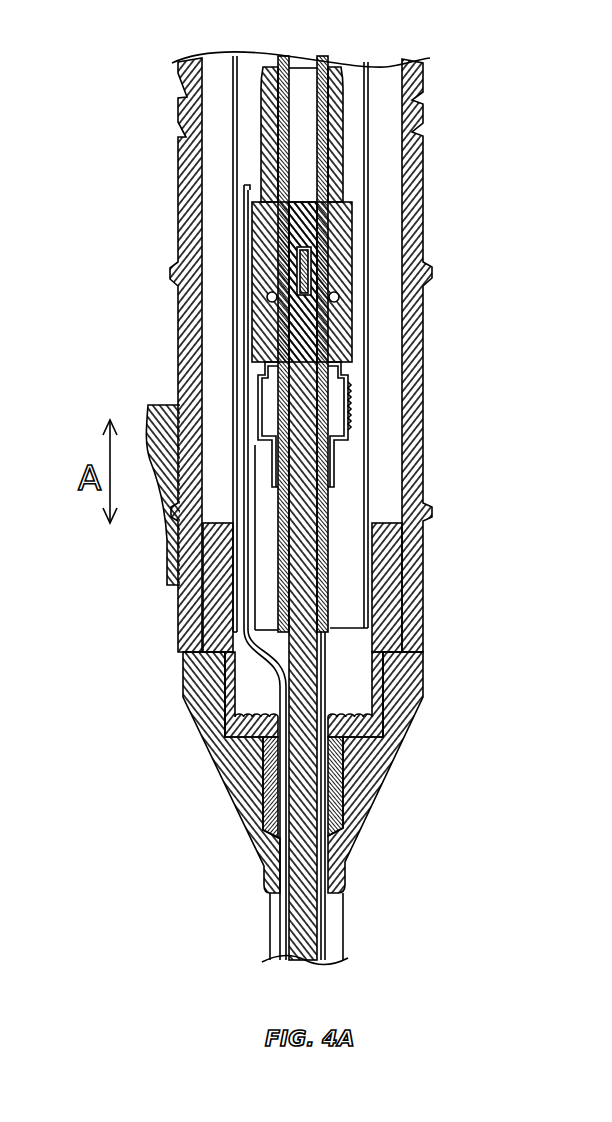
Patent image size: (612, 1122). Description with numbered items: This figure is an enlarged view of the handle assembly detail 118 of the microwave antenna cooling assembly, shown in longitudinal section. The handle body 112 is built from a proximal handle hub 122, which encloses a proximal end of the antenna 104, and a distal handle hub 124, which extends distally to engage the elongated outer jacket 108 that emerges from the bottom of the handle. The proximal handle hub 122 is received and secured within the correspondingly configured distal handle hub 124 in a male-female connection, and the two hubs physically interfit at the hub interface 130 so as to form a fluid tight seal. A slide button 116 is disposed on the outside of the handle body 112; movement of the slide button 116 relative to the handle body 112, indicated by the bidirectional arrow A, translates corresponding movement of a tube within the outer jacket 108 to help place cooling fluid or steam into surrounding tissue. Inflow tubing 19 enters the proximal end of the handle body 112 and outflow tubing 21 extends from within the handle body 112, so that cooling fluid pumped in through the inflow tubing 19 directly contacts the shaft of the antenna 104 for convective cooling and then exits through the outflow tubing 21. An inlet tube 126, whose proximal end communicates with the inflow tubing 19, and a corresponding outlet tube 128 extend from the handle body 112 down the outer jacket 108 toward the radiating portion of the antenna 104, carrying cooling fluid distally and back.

The handle assembly detail 118 is at (488, 40).
The handle body 112 is at (424, 210).
The proximal handle hub 122 is at (178, 372).
The inlet tube 126 is at (248, 242).
The inflow tubing 19 is at (268, 597).
The outflow tubing 21 is at (347, 527).
The slide button 116 is at (148, 408).
The distal handle hub 124 is at (200, 678).
The hub interface 130 is at (223, 712).
The antenna 104 is at (377, 690).
The outlet tube 128 is at (323, 920).
The outer jacket 108 is at (344, 952).